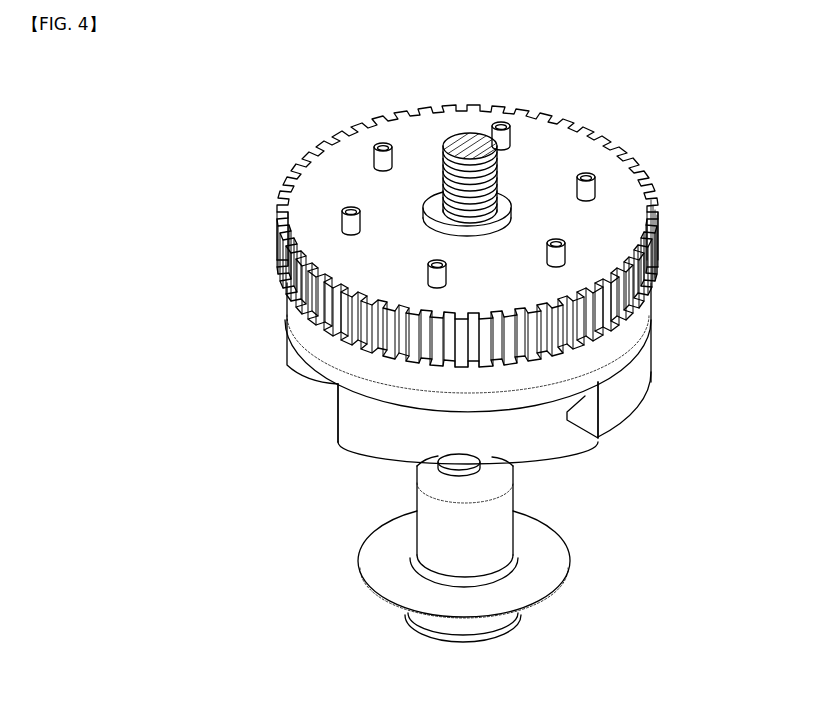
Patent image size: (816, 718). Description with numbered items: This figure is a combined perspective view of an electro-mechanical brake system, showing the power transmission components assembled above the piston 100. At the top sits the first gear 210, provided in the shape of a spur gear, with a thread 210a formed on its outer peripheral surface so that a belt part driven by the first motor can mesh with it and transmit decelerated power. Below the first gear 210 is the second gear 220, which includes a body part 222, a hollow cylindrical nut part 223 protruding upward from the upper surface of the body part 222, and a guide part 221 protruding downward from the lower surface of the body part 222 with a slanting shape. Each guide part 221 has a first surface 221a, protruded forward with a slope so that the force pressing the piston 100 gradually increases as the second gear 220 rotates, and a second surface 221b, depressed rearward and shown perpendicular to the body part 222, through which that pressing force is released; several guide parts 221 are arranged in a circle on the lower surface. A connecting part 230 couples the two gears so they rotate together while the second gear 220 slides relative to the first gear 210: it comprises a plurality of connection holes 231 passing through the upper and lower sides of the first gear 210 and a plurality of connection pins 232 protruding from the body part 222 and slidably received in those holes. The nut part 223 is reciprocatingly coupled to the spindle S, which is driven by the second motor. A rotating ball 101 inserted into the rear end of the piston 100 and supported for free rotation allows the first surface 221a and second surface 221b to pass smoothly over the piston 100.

The piston 100 is at (592, 580).
The rotating ball 101 is at (490, 453).
The first gear 210 is at (655, 162).
The thread 210a is at (657, 253).
The second gear 220 is at (678, 315).
The guide part 221 is at (225, 407).
The first surface 221a is at (370, 453).
The second surface 221b is at (338, 414).
The body part 222 is at (593, 358).
The nut part 223 is at (503, 217).
The connecting part 230 is at (190, 203).
The connection holes 231 is at (347, 240).
The connection pins 232 is at (343, 227).
The spindle S is at (498, 172).